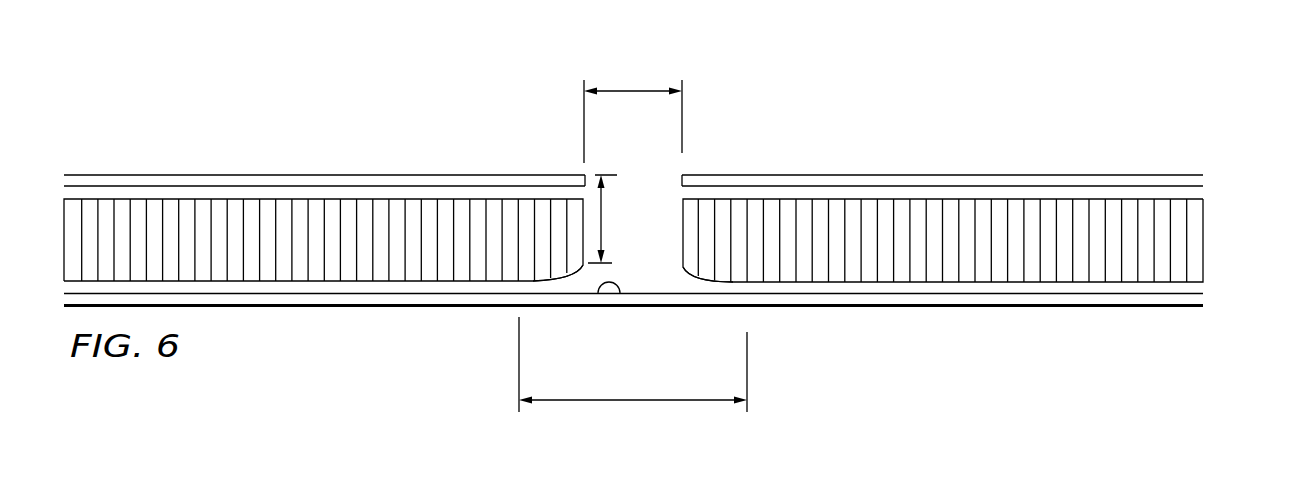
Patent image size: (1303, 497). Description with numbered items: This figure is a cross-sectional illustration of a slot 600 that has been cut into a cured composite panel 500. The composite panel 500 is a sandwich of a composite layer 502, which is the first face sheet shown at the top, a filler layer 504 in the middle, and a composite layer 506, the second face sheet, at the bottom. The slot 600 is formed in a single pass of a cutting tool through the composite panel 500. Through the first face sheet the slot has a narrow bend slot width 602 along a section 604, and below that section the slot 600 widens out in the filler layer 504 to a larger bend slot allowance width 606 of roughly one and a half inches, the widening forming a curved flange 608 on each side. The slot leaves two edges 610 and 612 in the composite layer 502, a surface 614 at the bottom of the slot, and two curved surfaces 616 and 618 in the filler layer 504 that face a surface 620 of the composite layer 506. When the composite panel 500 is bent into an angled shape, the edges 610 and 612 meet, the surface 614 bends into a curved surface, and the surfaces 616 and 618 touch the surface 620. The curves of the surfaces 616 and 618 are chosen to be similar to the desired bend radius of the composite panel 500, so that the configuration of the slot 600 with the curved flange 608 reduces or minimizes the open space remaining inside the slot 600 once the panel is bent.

The composite panel 500 is at (343, 114).
The composite layer 502 is at (1113, 175).
The filler layer 504 is at (1188, 257).
The composite layer 506 is at (1113, 297).
The slot 600 is at (652, 137).
The bend slot width 602 is at (635, 88).
The section 604 is at (602, 218).
The bend slot allowance width 606 is at (648, 403).
The curved flange 608 is at (705, 277).
The edge 610 is at (585, 192).
The edge 612 is at (681, 182).
The surface 614 is at (733, 307).
The surface 616 is at (557, 278).
The surface 618 is at (683, 272).
The surface 620 is at (620, 293).